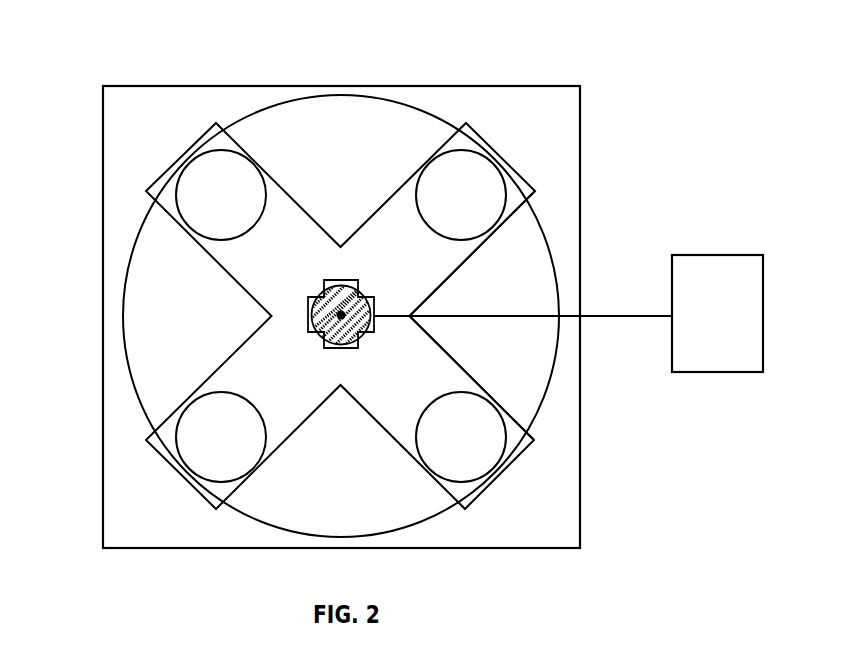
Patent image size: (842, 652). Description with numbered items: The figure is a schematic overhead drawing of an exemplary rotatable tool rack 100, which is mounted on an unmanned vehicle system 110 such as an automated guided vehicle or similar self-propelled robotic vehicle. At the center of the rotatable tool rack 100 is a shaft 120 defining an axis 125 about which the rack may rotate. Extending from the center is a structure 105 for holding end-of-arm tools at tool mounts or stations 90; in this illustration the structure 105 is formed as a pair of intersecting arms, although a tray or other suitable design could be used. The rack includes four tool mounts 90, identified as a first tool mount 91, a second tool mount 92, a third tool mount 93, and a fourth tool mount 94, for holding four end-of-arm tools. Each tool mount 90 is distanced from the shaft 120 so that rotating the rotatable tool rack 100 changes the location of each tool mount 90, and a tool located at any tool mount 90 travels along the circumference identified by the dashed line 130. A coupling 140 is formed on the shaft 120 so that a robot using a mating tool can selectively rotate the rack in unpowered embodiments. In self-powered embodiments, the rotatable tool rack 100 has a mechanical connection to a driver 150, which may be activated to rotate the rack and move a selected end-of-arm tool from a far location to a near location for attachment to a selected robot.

The rotatable tool rack 100 is at (85, 573).
The unmanned vehicle system 110 is at (562, 83).
The dashed line 130 is at (358, 95).
The tool mount 90 is at (173, 158).
The structure 105 is at (478, 248).
The first tool mount 91 is at (233, 453).
The second tool mount 92 is at (473, 453).
The third tool mount 93 is at (473, 210).
The fourth tool mount 94 is at (233, 210).
The coupling 140 is at (306, 296).
The shaft 120 is at (362, 290).
The axis 125 is at (341, 320).
The driver 150 is at (734, 321).